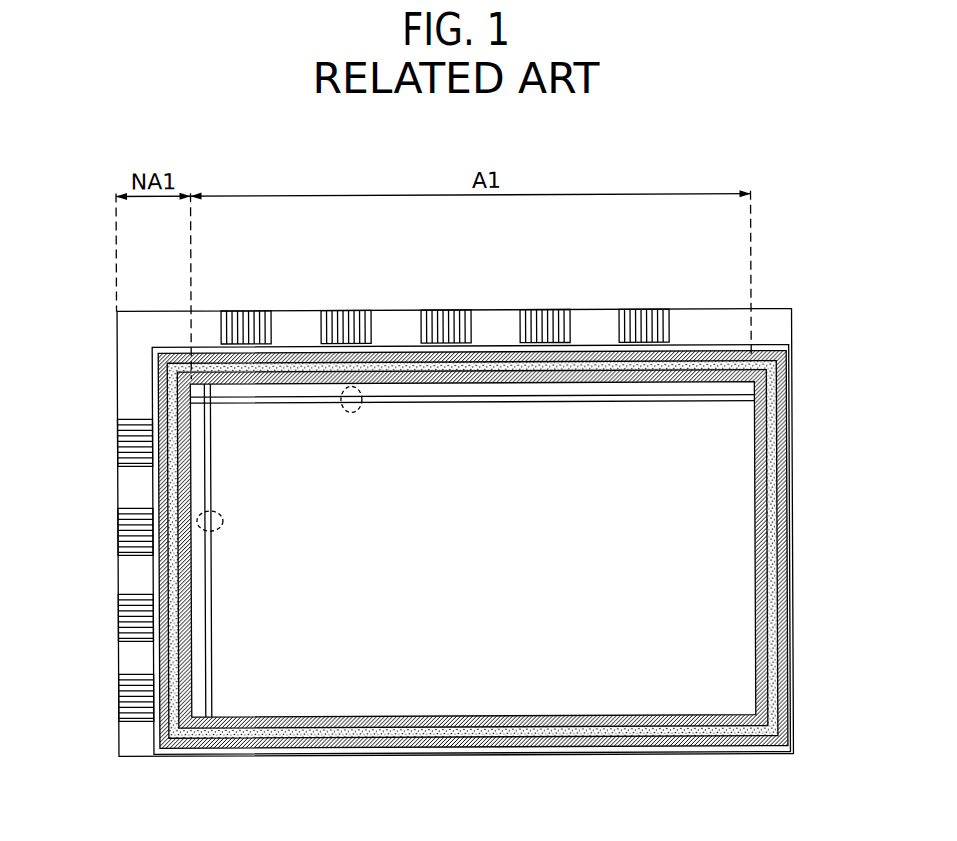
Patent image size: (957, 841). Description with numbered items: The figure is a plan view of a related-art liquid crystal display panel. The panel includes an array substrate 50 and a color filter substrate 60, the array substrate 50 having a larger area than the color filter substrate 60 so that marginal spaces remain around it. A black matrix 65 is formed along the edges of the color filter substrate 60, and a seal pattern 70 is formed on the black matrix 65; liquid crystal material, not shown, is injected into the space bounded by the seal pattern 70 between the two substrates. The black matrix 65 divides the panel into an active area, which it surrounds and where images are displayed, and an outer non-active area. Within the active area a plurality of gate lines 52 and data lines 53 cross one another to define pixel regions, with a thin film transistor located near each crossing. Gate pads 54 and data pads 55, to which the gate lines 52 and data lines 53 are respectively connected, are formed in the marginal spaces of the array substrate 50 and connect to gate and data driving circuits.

The array substrate 50 is at (778, 324).
The gate lines 52 is at (356, 411).
The data lines 53 is at (212, 530).
The gate pads 54 is at (132, 696).
The data pads 55 is at (641, 309).
The color filter substrate 60 is at (492, 344).
The black matrix 65 is at (708, 347).
The seal pattern 70 is at (390, 367).